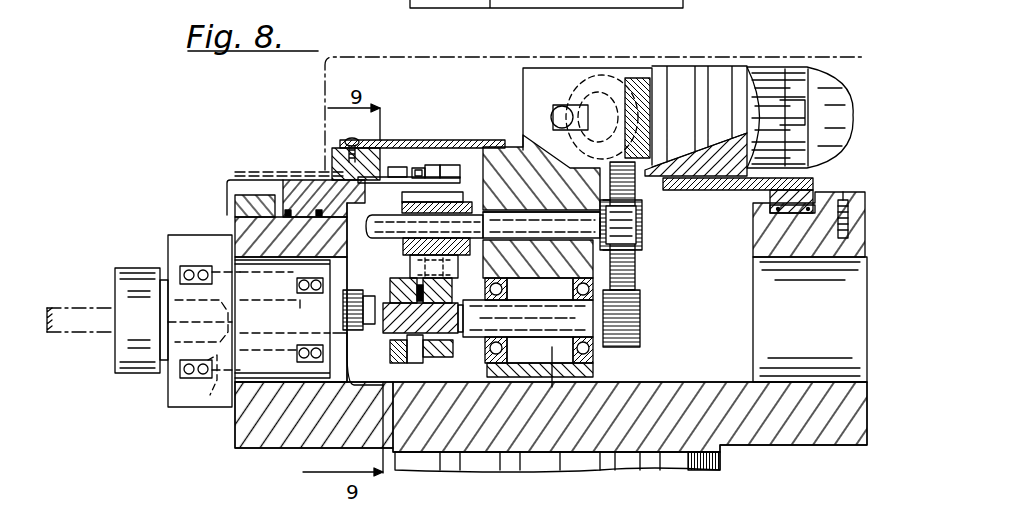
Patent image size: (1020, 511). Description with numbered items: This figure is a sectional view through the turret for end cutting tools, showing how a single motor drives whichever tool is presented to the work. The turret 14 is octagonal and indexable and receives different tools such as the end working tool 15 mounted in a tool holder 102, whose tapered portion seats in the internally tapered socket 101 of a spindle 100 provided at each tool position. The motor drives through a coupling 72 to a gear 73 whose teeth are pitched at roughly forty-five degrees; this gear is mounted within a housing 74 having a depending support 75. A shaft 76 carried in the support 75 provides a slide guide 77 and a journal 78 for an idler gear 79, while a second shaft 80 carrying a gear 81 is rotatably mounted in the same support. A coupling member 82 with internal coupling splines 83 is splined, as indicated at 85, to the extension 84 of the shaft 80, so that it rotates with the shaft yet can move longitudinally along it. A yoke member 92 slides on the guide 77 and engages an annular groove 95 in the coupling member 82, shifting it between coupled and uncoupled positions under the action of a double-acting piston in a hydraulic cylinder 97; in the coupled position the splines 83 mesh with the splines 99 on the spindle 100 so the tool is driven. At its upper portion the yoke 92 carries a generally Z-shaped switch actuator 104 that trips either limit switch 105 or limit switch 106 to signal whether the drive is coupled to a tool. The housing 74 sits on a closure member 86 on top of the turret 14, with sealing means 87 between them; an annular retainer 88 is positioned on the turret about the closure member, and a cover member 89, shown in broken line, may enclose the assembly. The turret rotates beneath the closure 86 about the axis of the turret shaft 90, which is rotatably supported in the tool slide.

The turret 14 is at (245, 233).
The end working tool 15 is at (83, 306).
The coupling 72 is at (780, 85).
The gear 73 is at (627, 78).
The housing 74 is at (533, 91).
The depending support 75 is at (530, 193).
The shaft 76 is at (480, 258).
The slide guide 77 is at (378, 228).
The journal 78 is at (640, 229).
The idler gear 79 is at (628, 278).
The second shaft 80 is at (500, 327).
The gear 81 is at (622, 314).
The coupling member 82 is at (397, 278).
The internal coupling splines 83 is at (388, 345).
The shaft extension 84 is at (413, 333).
The spline connection 85 is at (486, 352).
The closure member 86 is at (298, 179).
The sealing means 87 is at (288, 210).
The annular retainer 88 is at (237, 195).
The cover member 89 is at (365, 57).
The turret shaft 90 is at (716, 459).
The yoke member 92 is at (466, 200).
The annular groove 95 is at (445, 358).
The hydraulic cylinder 97 is at (485, 262).
The splines 99 is at (352, 311).
The spindle 100 is at (212, 378).
The internally tapered socket 101 is at (214, 304).
The tool holder 102 is at (130, 357).
The switch actuator 104 is at (425, 168).
The limit switch 105 is at (397, 167).
The limit switch 106 is at (447, 165).